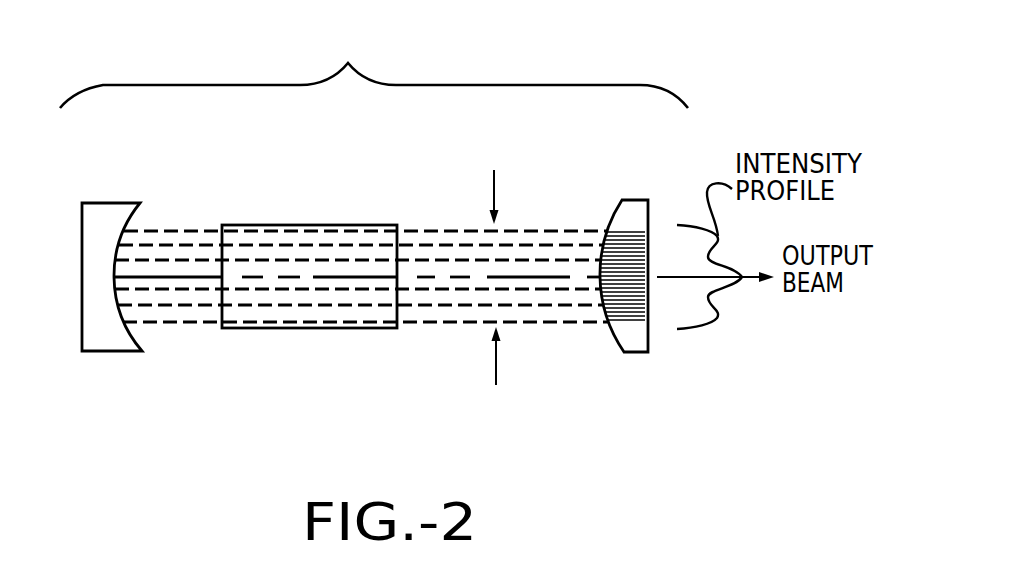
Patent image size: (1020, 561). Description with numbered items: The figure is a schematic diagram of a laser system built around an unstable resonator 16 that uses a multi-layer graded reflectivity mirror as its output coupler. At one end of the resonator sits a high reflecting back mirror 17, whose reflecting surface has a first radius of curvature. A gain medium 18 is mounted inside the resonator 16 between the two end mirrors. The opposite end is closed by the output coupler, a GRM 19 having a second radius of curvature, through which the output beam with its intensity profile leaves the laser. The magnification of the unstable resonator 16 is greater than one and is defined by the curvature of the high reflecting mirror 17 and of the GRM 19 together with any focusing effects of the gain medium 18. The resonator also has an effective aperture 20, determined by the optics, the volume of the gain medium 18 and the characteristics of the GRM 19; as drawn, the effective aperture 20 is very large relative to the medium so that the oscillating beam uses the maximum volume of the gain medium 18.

The unstable resonator 16 is at (374, 63).
The high reflecting back mirror 17 is at (82, 324).
The gain medium 18 is at (278, 328).
The GRM 19 is at (650, 214).
The effective aperture 20 is at (450, 349).